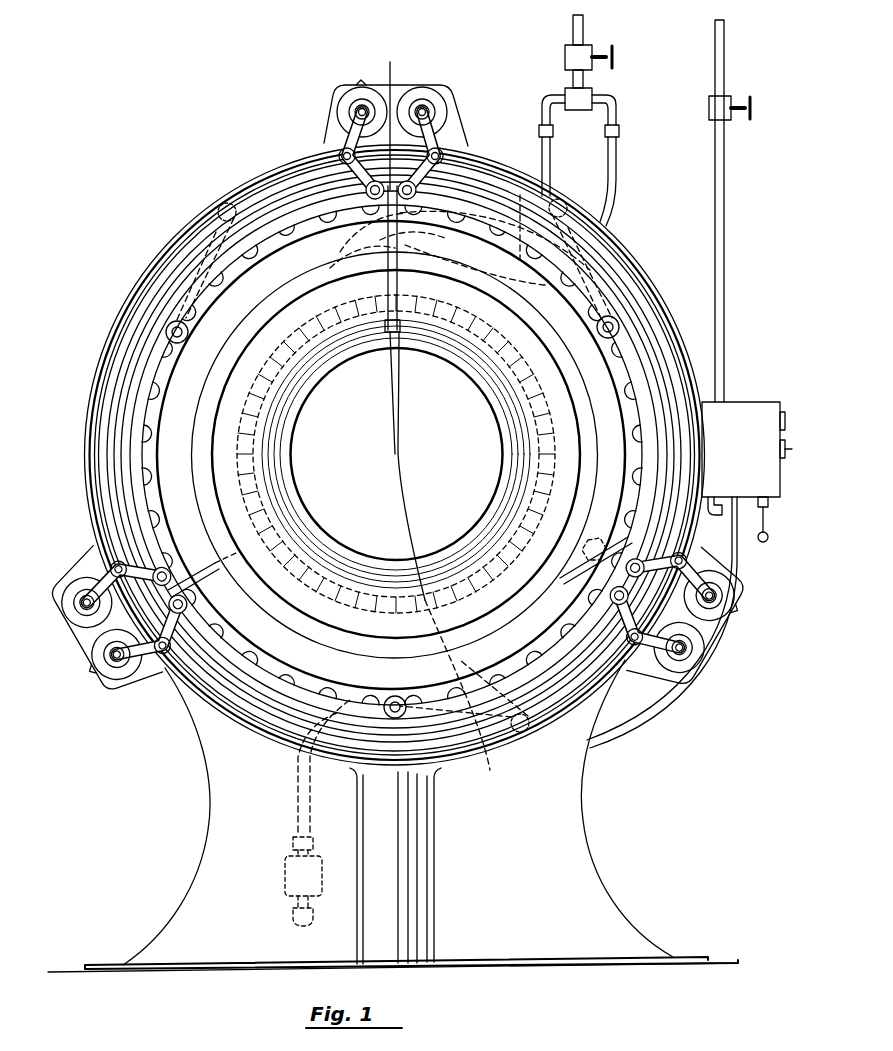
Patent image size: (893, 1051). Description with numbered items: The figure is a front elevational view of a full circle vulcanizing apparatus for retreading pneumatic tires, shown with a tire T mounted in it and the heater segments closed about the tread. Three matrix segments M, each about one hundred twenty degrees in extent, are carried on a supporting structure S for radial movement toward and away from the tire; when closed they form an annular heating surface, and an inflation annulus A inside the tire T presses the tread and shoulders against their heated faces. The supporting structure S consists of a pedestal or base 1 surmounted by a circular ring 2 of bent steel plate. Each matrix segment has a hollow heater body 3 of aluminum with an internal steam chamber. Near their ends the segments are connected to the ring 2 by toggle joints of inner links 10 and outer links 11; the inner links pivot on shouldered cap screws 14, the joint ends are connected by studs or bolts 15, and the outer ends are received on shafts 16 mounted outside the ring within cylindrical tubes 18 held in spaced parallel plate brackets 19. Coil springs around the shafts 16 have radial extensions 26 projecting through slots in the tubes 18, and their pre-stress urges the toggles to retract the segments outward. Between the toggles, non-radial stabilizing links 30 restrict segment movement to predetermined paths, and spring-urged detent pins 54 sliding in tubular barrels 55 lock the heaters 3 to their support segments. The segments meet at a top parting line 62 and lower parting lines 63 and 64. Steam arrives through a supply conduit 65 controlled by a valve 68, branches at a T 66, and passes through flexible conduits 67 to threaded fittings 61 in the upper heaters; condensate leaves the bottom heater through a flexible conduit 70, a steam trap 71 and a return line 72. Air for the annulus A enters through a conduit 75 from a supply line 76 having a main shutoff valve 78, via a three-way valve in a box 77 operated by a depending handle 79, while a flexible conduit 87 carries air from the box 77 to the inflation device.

The pedestal or base 1 is at (210, 830).
The circular ring 2 is at (132, 292).
The hollow heater body 3 is at (186, 432).
The inner links 10 is at (338, 170).
The outer links 11 is at (345, 135).
The shouldered cap screws 14 is at (399, 381).
The studs or bolts 15 is at (446, 152).
The shafts 16 is at (355, 113).
The cylindrical steel tubes or barrels 18 is at (337, 104).
The spaced parallel plate brackets 19 is at (336, 92).
The radial extension 26 is at (361, 80).
The non-radial stabilizing links 30 is at (180, 282).
The detent pins 54 is at (172, 330).
The tubular barrels 55 is at (168, 336).
The threaded fittings 61 is at (366, 236).
The parting line 62 is at (385, 262).
The parting line 63 is at (220, 565).
The parting line 64 is at (565, 570).
The pipe or supply conduit 65 is at (586, 22).
The T 66 is at (580, 112).
The flexible conduits 67 is at (543, 150).
The valve 68 is at (566, 52).
The flexible conduit 70 is at (296, 803).
The steam trap 71 is at (284, 881).
The return line 72 is at (296, 924).
The stem or conduit 75 is at (722, 512).
The supply line 76 is at (722, 252).
The box 77 is at (758, 400).
The main shutoff valve 78 is at (710, 108).
The handle 79 is at (768, 538).
The flexible conduit 87 is at (652, 722).
The supporting structure S is at (240, 178).
The matrix segments M is at (203, 372).
The tire T is at (298, 392).
The inflation annulus A is at (258, 494).